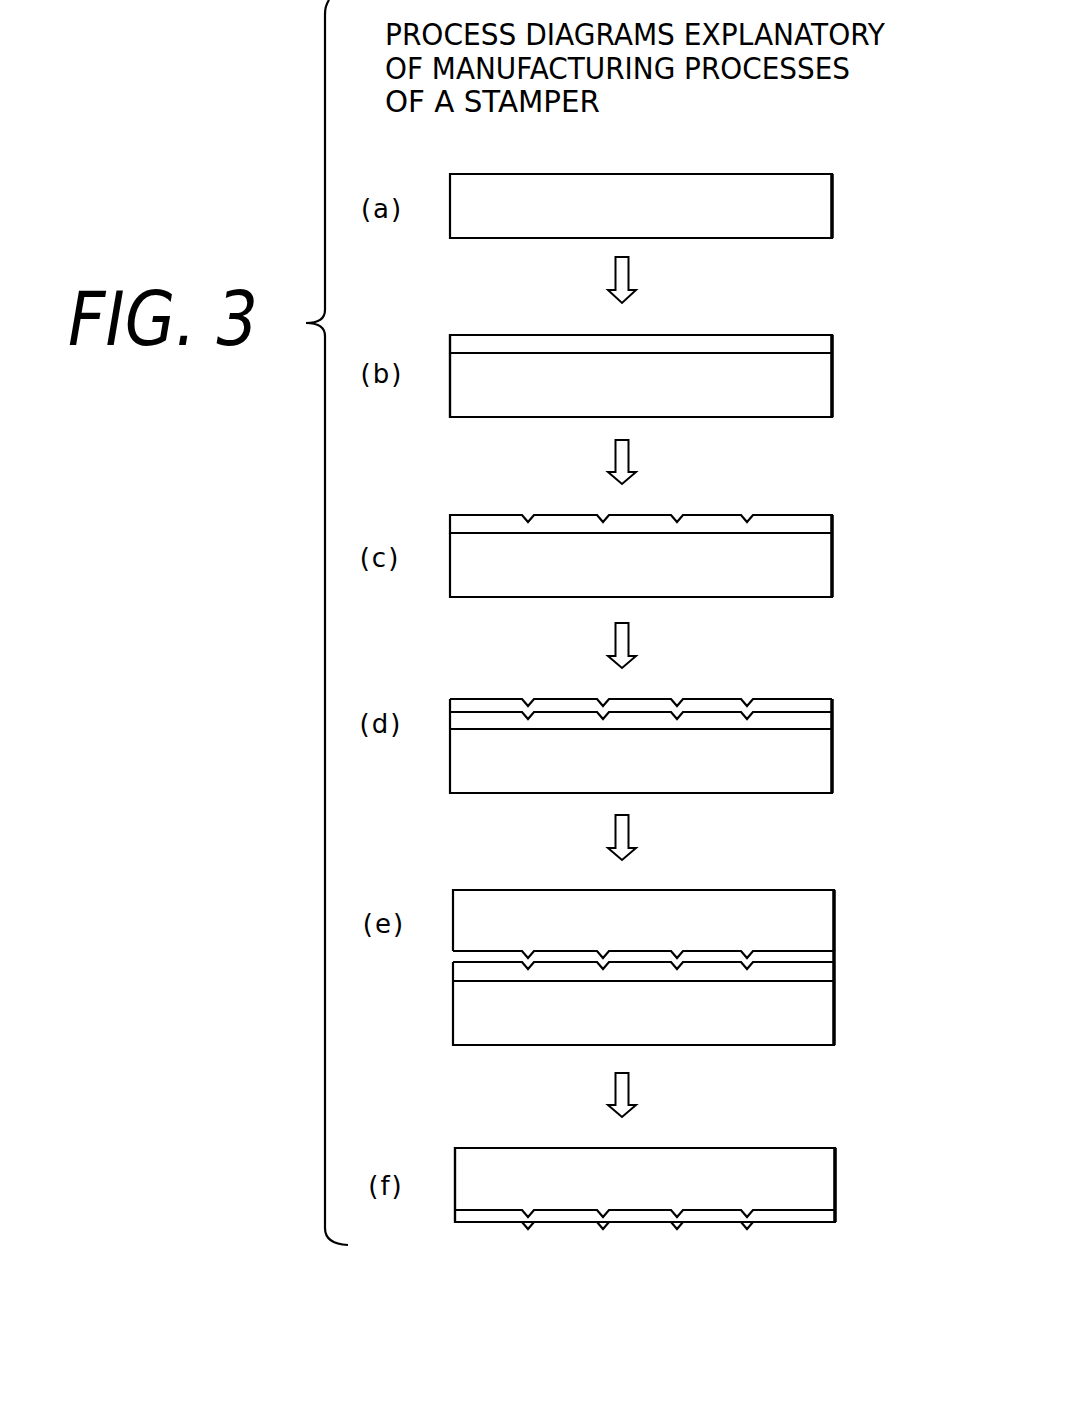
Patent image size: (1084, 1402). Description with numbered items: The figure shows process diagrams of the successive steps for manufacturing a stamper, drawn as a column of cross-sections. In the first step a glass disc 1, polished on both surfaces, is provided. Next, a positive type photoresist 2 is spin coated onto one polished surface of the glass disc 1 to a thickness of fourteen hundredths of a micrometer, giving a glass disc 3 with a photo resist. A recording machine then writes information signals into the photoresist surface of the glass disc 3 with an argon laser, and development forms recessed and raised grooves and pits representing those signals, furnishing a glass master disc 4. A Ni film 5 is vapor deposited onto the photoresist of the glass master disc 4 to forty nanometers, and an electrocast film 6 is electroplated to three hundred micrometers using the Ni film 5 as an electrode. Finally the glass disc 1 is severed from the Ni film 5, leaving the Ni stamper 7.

The glass disc 1 is at (797, 205).
The positive type photoresist 2 is at (797, 341).
The glass disc with a photo resist 3 is at (912, 300).
The glass master disc 4 is at (803, 530).
The Ni film 5 is at (800, 705).
The electrocast film 6 is at (800, 933).
The Ni stamper 7 is at (928, 1140).